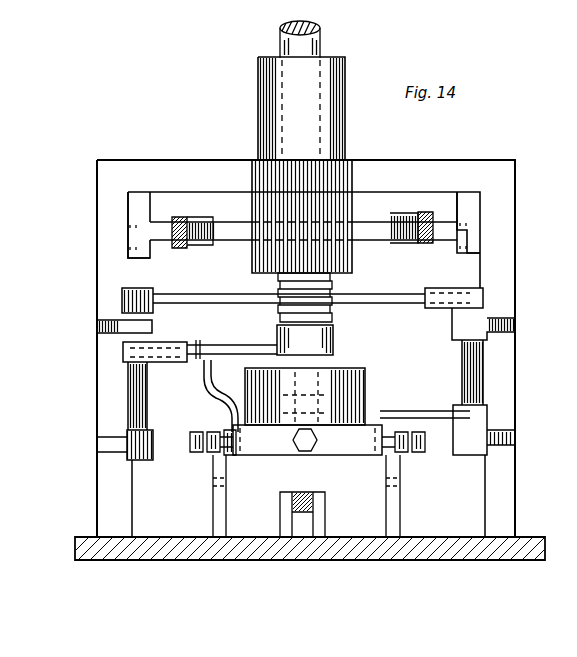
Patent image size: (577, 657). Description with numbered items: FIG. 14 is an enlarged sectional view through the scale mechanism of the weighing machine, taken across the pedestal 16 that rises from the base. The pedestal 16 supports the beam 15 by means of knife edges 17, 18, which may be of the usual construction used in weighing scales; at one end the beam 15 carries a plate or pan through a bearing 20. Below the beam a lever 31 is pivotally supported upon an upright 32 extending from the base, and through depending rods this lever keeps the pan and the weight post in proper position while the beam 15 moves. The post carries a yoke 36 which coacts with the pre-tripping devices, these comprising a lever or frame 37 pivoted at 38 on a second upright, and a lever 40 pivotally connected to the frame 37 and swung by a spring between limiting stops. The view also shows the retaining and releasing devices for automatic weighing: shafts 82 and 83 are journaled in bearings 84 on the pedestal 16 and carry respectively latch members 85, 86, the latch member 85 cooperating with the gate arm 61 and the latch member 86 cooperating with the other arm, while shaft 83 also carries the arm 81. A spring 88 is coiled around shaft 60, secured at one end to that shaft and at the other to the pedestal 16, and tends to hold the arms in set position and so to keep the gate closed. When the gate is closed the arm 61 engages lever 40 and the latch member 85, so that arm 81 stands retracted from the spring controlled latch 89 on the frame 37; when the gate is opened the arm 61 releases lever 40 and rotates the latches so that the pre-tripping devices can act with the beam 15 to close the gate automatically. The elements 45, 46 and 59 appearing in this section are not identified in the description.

The beam 15 is at (420, 245).
The pedestal 16 is at (398, 166).
The knife edge 17 is at (125, 233).
The knife edge 18 is at (122, 250).
The bearing 20 is at (207, 300).
The lever 31 is at (312, 456).
The upright 32 is at (326, 520).
The yoke 36 is at (200, 454).
The pre-tripping lever or frame 37 is at (226, 507).
The pivot 38 is at (418, 454).
The lever 40 is at (222, 392).
The coil 45 is at (352, 373).
The nut 46 is at (305, 448).
The cylinder 59 is at (346, 82).
The shaft 60 is at (320, 50).
The arm 61 is at (240, 350).
The arm 81 is at (422, 412).
The shaft 82 is at (138, 384).
The shaft 83 is at (472, 372).
The bearing 84 is at (108, 322).
The latch member 85 is at (128, 352).
The latch member 86 is at (472, 298).
The spring 88 is at (330, 312).
The spring controlled latch 89 is at (244, 456).